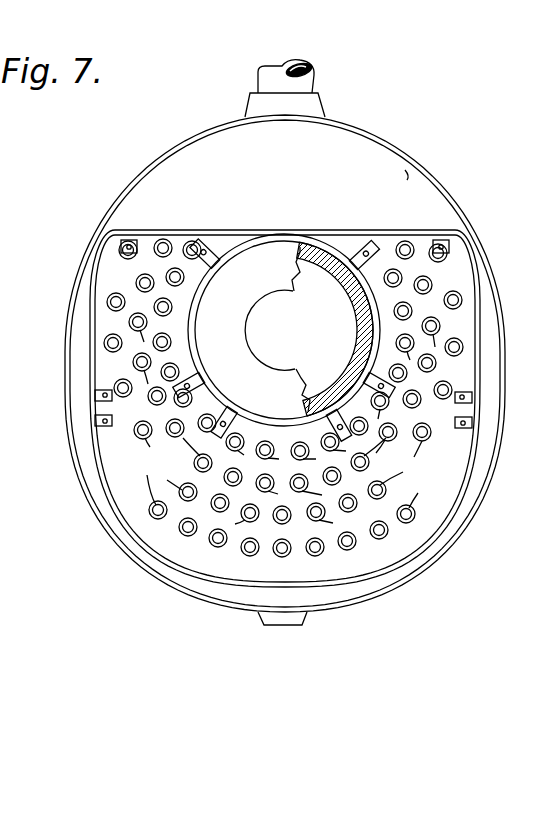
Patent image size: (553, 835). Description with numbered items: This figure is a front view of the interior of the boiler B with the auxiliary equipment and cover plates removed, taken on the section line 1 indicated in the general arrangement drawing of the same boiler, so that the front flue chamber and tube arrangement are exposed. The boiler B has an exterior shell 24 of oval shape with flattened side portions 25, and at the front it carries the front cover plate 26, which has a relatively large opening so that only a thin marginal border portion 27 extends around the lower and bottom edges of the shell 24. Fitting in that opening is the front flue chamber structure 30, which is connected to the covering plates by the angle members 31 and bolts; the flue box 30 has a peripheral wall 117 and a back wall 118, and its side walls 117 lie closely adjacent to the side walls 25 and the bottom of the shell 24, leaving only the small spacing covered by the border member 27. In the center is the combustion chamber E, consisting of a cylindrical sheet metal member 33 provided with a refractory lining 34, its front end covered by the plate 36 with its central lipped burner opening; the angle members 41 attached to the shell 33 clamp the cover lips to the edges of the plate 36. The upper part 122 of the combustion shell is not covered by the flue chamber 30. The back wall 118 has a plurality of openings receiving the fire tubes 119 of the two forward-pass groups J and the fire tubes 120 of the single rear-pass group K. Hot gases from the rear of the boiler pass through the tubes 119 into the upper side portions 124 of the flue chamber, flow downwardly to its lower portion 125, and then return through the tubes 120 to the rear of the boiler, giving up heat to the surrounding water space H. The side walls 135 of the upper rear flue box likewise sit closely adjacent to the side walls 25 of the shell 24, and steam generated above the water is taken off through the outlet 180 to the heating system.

The washing machine 1 is at (217, 137).
The exterior shell 24 is at (403, 150).
The flattened side portions 25 is at (65, 358).
The front cover plate 26 is at (410, 172).
The marginal border portion 27 is at (140, 542).
The front flue chamber structure 30 is at (137, 482).
The angle members 31 is at (133, 240).
The cylindrical sheet metal member 33 is at (357, 315).
The refractory lining 34 is at (347, 278).
The plate 36 is at (235, 320).
The angle members 41 is at (217, 250).
The peripheral wall 117 is at (88, 380).
The back wall 118 is at (107, 316).
The fire tubes 119 is at (100, 343).
The fire tubes 120 is at (188, 532).
The upper part of the combustion shell 122 is at (295, 235).
The upper side portions 124 is at (110, 277).
The lower portion 125 is at (302, 572).
The side walls 135 is at (539, 414).
The outlet 180 is at (305, 88).
The boiler B is at (367, 130).
The combustion chamber E is at (382, 268).
The water space H is at (102, 487).
The forward-pass fire tubes J is at (117, 443).
The rear-pass fire tubes K is at (230, 560).